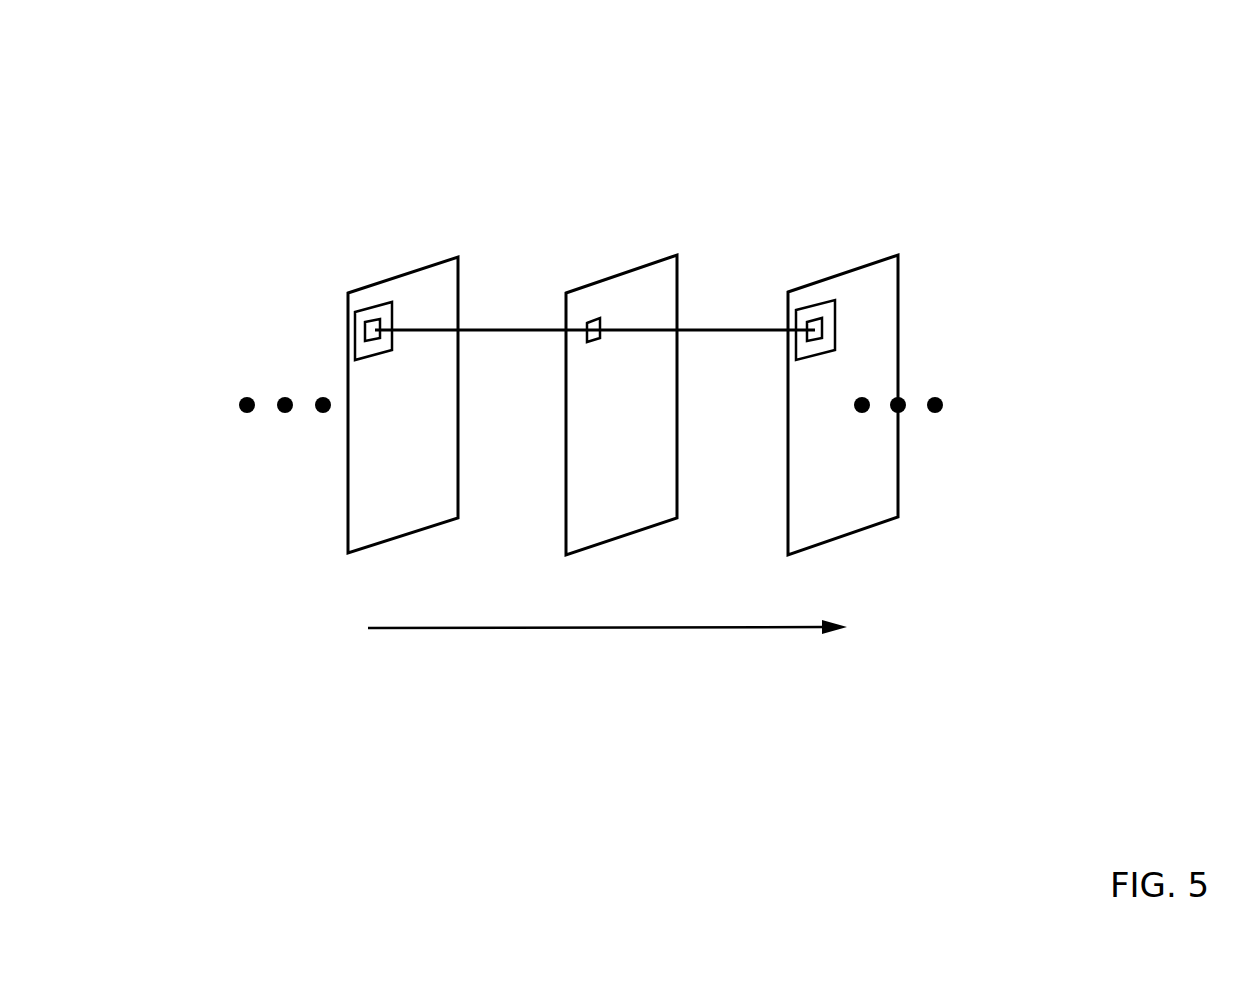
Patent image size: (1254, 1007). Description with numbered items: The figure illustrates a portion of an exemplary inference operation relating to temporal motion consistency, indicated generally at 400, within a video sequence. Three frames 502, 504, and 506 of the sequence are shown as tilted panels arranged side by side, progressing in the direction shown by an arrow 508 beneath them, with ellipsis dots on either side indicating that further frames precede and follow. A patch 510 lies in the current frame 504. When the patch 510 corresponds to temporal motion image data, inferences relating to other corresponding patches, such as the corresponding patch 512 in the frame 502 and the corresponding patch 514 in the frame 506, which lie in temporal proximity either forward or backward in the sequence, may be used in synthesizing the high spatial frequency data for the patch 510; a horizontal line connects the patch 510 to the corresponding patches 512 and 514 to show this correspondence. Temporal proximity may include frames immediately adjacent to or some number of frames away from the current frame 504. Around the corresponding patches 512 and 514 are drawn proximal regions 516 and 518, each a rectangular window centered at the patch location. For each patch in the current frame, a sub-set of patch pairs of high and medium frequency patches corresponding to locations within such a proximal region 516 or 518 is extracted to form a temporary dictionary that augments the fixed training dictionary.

The display system / chain of display panels 400 is at (282, 121).
The frame 502 is at (400, 278).
The current frame 504 is at (620, 278).
The frame 506 is at (843, 278).
The arrow 508 is at (607, 630).
The patch 510 is at (586, 340).
The corresponding patch 512 is at (364, 340).
The corresponding patch 514 is at (807, 340).
The proximal region 516 is at (366, 362).
The proximal region 518 is at (808, 360).